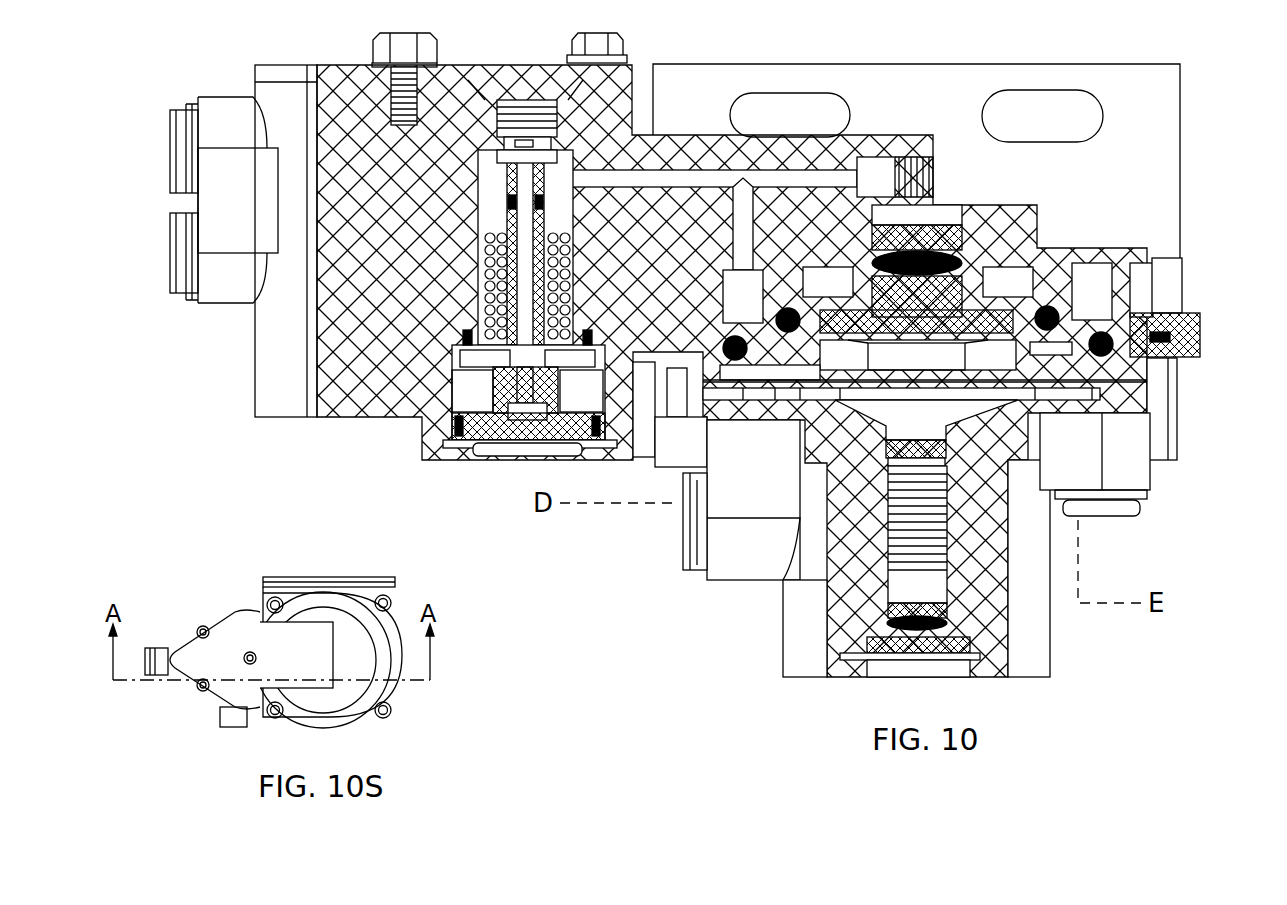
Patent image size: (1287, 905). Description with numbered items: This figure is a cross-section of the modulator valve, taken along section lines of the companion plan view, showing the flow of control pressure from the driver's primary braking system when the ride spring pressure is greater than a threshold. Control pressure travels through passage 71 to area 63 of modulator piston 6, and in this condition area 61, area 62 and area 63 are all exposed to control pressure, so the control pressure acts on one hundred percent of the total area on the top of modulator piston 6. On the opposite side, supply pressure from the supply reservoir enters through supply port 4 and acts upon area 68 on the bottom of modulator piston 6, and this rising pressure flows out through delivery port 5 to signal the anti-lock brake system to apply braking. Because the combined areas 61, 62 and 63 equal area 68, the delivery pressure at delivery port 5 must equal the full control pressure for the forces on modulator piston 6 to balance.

The passage 71 is at (747, 223).
The area 61 is at (937, 230).
The area 62 is at (1000, 278).
The area 63 is at (1092, 288).
The modulator piston 6 is at (1170, 352).
The area 68 is at (1050, 381).
The delivery port 5 is at (1115, 520).
The supply port 4 is at (685, 565).